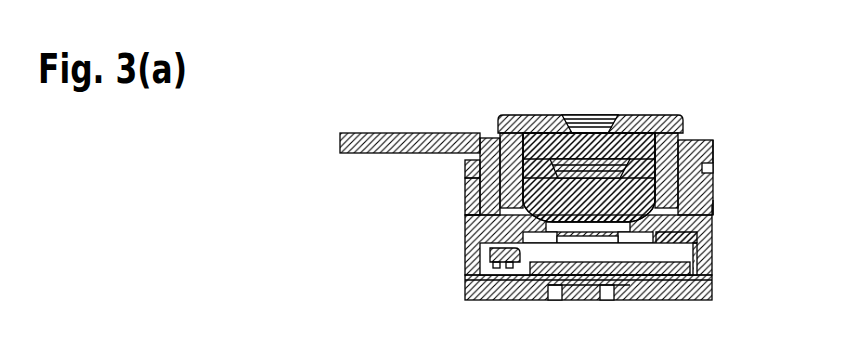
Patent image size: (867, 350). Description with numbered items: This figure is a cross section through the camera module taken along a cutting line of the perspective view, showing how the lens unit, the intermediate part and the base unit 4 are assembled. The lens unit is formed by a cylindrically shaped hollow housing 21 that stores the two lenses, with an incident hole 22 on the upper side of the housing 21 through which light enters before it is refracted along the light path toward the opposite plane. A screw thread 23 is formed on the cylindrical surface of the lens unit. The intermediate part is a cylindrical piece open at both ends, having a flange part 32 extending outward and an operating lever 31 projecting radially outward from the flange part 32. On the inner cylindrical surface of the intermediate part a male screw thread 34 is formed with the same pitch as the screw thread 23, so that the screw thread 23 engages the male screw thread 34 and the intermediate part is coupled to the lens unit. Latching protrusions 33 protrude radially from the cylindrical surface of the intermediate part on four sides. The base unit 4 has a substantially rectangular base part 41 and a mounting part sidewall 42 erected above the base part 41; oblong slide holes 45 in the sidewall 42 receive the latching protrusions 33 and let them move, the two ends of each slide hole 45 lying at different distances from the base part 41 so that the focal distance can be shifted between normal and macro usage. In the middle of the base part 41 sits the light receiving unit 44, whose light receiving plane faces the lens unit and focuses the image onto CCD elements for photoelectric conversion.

The base unit 4 is at (514, 283).
The housing 21 is at (507, 150).
The incident hole 22 is at (618, 110).
The screw thread 23 is at (694, 140).
The operating lever 31 is at (410, 133).
The flange part 32 is at (714, 148).
The latching protrusions 33 is at (466, 193).
The male screw thread 34 is at (705, 168).
The base part 41 is at (712, 286).
The mounting part sidewall 42 is at (466, 172).
The light receiving unit 44 is at (593, 275).
The slide holes 45 is at (459, 211).